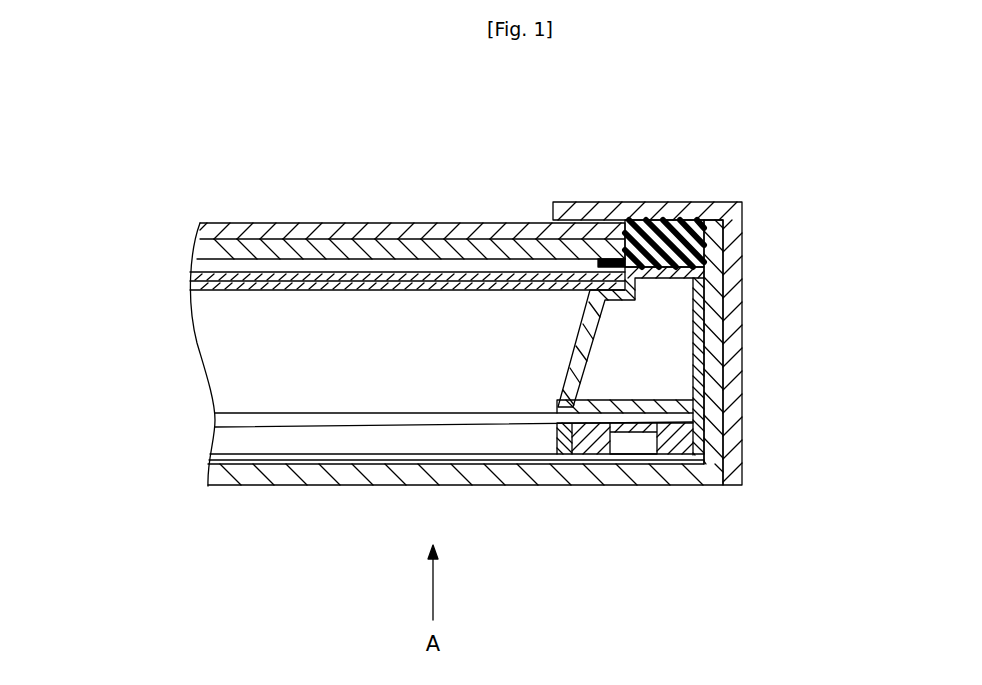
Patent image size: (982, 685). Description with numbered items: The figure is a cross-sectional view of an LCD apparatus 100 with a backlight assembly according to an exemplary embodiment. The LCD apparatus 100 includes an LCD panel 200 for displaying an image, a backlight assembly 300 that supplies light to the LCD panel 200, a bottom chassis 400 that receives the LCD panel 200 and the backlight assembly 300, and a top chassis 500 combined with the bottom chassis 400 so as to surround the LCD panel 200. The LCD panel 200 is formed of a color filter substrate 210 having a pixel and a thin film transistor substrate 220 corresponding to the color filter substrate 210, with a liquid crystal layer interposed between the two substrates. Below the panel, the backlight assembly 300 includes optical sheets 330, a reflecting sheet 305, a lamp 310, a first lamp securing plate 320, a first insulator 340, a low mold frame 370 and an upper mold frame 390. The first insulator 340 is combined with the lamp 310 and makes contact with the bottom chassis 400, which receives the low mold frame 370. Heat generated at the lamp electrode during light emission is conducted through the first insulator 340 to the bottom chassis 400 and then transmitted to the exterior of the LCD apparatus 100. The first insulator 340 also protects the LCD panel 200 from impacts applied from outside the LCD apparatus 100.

The LCD apparatus 100 is at (444, 90).
The LCD panel 200 is at (96, 195).
The color filter substrate 210 is at (207, 232).
The thin film transistor substrate 220 is at (203, 252).
The backlight assembly 300 is at (835, 240).
The reflecting sheet 305 is at (212, 457).
The lamp 310 is at (217, 413).
The first lamp securing plate 320 is at (700, 405).
The optical sheets 330 is at (187, 277).
The first insulator 340 is at (692, 444).
The low mold frame 370 is at (708, 326).
The upper mold frame 390 is at (692, 247).
The bottom chassis 400 is at (555, 487).
The top chassis 500 is at (730, 220).